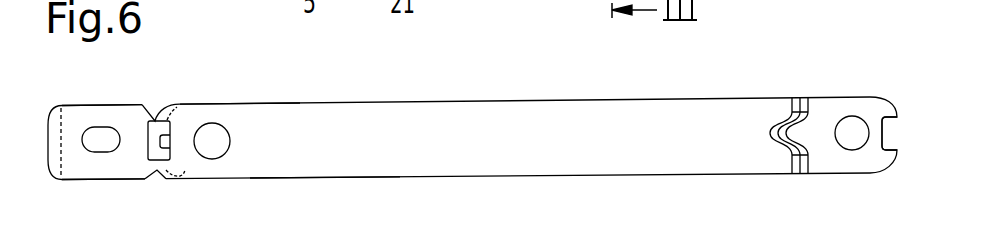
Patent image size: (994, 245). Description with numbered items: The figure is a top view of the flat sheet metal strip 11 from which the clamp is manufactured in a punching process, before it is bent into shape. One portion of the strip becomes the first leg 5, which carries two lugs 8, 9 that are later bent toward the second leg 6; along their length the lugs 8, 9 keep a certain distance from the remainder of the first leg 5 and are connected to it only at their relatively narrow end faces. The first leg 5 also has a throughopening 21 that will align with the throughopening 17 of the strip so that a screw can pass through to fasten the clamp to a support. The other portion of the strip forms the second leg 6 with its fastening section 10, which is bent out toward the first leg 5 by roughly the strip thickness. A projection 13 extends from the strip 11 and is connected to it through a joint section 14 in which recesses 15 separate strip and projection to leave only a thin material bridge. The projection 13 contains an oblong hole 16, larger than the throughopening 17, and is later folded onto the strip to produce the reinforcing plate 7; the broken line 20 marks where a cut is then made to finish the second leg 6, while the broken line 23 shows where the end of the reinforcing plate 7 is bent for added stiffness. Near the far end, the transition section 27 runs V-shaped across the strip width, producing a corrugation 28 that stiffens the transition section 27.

The first leg 5 is at (825, 165).
The second leg 6 is at (210, 113).
The reinforcing plate 7 is at (123, 175).
The lug 8 is at (896, 152).
The lug 9 is at (897, 122).
The fastening section 10 is at (170, 141).
The sheet metal strip 11 is at (327, 168).
The projection 13 is at (107, 100).
The joint section 14 is at (153, 118).
The recess 15 is at (157, 172).
The oblong hole 16 is at (107, 145).
The throughopening 17 is at (222, 138).
The broken line 20 is at (177, 168).
The throughopening 21 is at (858, 140).
The broken line 23 is at (64, 128).
The transition section 27 is at (789, 176).
The corrugation 28 is at (807, 113).